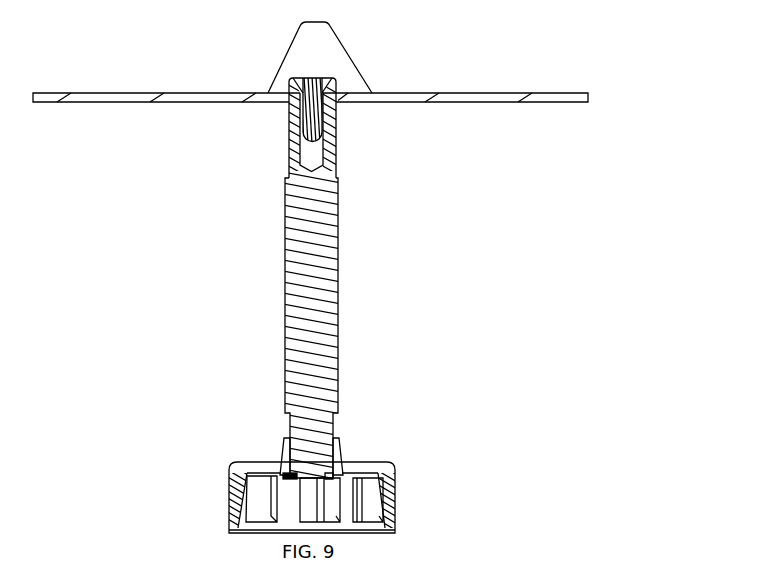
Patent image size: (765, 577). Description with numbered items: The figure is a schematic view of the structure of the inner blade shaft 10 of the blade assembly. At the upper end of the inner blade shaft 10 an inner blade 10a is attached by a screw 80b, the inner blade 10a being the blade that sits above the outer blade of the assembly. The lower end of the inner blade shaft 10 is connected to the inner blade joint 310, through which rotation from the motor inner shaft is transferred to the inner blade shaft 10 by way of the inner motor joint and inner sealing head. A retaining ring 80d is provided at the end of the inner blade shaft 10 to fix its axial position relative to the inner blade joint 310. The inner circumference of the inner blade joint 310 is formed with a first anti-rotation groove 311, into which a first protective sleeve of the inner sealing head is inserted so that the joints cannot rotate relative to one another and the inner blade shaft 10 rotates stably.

The inner blade shaft 10 is at (315, 203).
The inner blade 10a is at (322, 63).
The screw 80b is at (315, 112).
The retaining ring 80d is at (289, 471).
The inner blade joint 310 is at (348, 469).
The first anti-rotation groove 311 is at (343, 500).